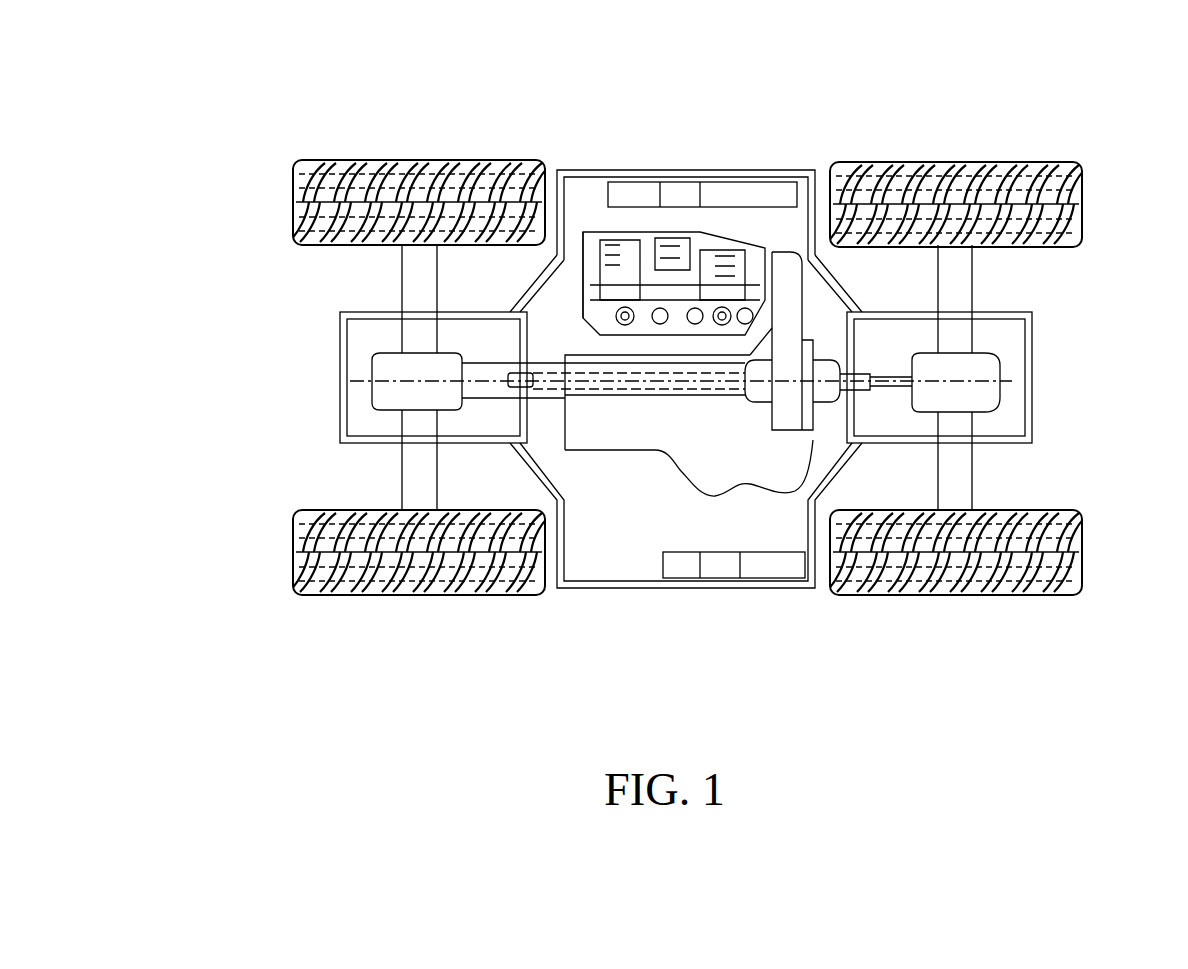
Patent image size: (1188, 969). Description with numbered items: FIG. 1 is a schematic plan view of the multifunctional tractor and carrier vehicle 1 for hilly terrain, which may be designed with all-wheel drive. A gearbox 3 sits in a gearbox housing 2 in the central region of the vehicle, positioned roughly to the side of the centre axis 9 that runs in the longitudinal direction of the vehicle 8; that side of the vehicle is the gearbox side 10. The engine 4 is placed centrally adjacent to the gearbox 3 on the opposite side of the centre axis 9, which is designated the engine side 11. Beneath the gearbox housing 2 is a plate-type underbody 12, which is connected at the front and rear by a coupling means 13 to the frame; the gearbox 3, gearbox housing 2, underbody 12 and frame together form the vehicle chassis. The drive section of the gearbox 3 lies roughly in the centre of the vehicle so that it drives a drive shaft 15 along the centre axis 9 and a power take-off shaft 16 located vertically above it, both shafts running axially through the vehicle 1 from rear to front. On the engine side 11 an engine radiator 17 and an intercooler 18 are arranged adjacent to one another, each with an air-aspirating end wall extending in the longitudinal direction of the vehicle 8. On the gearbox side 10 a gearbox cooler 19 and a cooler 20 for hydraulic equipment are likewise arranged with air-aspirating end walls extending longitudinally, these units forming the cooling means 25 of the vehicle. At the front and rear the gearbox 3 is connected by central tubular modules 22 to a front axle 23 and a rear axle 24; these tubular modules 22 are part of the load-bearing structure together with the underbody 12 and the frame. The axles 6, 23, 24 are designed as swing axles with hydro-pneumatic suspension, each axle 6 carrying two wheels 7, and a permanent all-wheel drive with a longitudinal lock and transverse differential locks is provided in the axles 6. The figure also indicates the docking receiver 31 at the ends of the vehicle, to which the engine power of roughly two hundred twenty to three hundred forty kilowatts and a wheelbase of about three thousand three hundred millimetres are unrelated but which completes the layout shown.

The vehicle 1 is at (235, 165).
The gearbox housing 2 is at (635, 430).
The gearbox 3 is at (685, 441).
The engine 4 is at (600, 232).
The axle 6 is at (415, 272).
The wheels 7 is at (1080, 176).
The longitudinal direction of vehicle 8 is at (757, 50).
The centre axis 9 is at (1012, 379).
The gearbox side 10 is at (797, 528).
The engine side 11 is at (773, 224).
The underbody 12 is at (898, 372).
The coupling means 13 is at (345, 332).
The drive shaft 15 is at (593, 385).
The power take-off shaft 16 is at (761, 341).
The engine radiator 17 is at (641, 190).
The intercooler 18 is at (720, 190).
The gearbox cooler 19 is at (692, 565).
The cooler for hydraulic equipment 20 is at (735, 565).
The central tubular module 22 is at (488, 384).
The front axle 23 is at (412, 478).
The rear axle 24 is at (955, 492).
The cooling means 25 is at (675, 190).
The docking receiver 31 is at (338, 382).